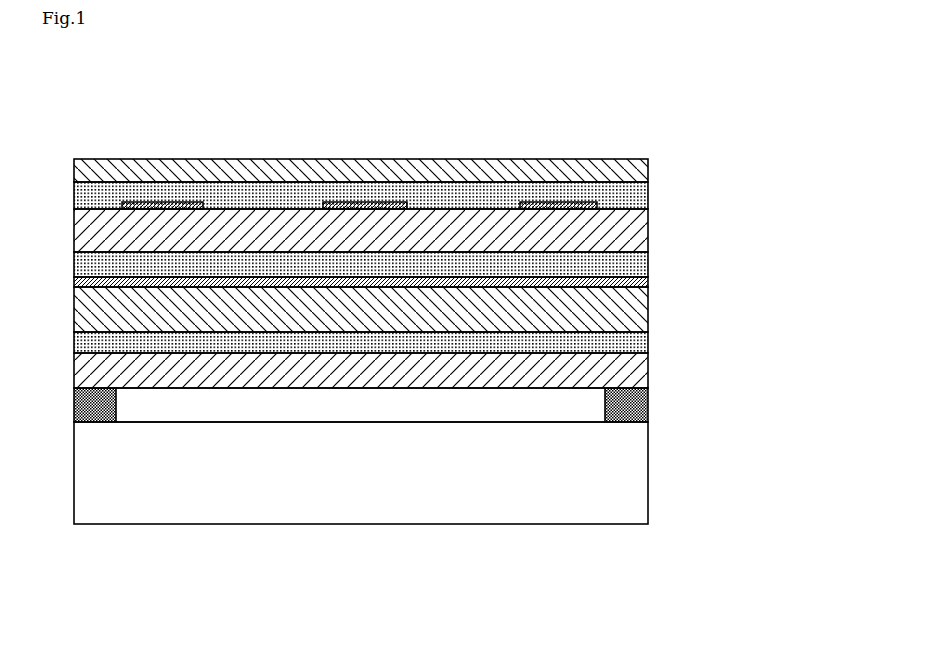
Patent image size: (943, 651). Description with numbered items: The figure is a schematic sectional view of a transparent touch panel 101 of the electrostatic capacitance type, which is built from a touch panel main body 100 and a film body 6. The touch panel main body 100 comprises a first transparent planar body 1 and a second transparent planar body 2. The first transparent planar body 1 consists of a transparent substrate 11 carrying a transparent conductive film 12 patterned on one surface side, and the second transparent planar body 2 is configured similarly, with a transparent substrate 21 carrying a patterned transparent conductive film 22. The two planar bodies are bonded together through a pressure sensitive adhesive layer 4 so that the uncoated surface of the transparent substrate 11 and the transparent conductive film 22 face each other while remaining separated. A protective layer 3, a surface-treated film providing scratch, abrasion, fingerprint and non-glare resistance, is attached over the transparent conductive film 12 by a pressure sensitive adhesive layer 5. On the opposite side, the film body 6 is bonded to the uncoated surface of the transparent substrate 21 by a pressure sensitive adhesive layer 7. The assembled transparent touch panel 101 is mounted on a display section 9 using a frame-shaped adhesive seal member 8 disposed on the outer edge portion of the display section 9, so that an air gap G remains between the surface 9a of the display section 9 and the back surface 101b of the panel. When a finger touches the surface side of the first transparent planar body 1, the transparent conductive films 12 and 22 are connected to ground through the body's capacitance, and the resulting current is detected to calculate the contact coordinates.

The transparent touch panel 101 is at (105, 133).
The touch panel main body 100 is at (457, 237).
The first transparent planar body 1 is at (416, 217).
The second transparent planar body 2 is at (416, 302).
The protective layer 3 is at (648, 167).
The pressure sensitive adhesive layer 5 is at (648, 194).
The transparent conductive film 12 is at (597, 204).
The transparent substrate 11 is at (394, 230).
The pressure sensitive adhesive layer 4 is at (648, 264).
The transparent conductive film 22 is at (648, 282).
The transparent substrate 21 is at (395, 309).
The pressure sensitive adhesive layer 7 is at (648, 343).
The film body 6 is at (648, 372).
The adhesive seal member 8 is at (648, 410).
The display section 9 is at (648, 470).
The surface of the display section 9a is at (442, 422).
The air gap G is at (548, 408).
The back surface of the transparent touch panel 101b is at (190, 386).